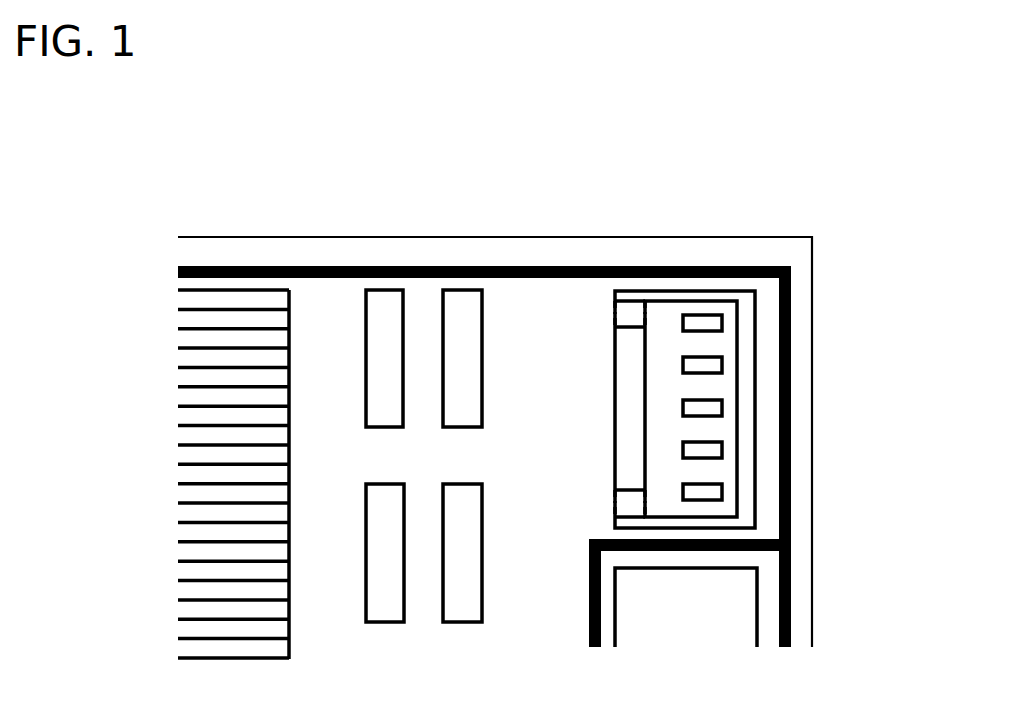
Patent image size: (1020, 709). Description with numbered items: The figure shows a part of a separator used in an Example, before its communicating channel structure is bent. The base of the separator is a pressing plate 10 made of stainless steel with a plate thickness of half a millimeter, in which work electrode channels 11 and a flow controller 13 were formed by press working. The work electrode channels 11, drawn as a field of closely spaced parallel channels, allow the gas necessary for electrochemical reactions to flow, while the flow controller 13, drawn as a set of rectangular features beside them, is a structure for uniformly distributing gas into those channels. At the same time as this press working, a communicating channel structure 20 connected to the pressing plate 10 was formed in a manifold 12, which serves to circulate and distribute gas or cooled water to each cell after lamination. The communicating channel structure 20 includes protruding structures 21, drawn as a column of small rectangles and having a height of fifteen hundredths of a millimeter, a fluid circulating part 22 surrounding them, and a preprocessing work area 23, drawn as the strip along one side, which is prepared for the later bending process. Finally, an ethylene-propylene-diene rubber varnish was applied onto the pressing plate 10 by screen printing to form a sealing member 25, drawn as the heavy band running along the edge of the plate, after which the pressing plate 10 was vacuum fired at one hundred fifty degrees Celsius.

The pressing plate 10 is at (527, 237).
The work electrode channels 11 is at (200, 320).
The manifold 12 is at (745, 362).
The flow controller 13 is at (390, 302).
The communicating channel structure 20 is at (728, 507).
The protruding structures 21 is at (710, 322).
The fluid circulating part 22 is at (637, 430).
The preprocessing work area 23 is at (644, 292).
The sealing member 25 is at (313, 268).